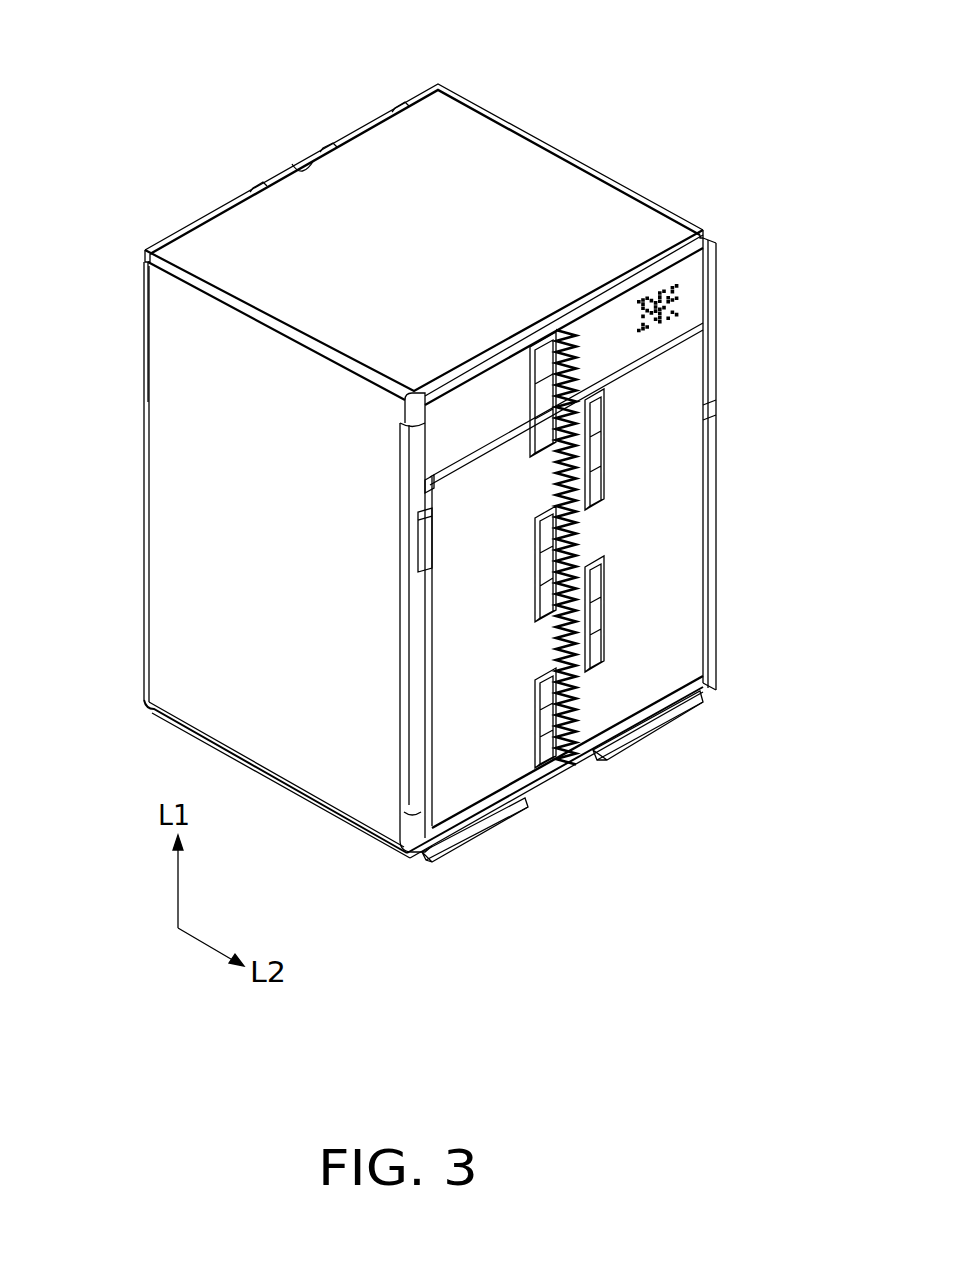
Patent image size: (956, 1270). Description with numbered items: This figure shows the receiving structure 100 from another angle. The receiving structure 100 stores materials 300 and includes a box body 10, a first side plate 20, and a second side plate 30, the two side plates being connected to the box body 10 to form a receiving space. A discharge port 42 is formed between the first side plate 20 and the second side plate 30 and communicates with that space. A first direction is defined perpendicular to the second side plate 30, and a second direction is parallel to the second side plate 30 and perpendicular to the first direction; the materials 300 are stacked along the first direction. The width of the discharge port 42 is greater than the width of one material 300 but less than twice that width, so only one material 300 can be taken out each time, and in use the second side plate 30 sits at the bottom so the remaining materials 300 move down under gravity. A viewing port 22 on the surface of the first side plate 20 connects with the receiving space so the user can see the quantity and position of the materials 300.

The receiving structure 100 is at (434, 49).
The box body 10 is at (175, 530).
The first side plate 20 is at (690, 385).
The viewing port 22 is at (596, 472).
The materials 300 is at (553, 770).
The second side plate 30 is at (447, 848).
The discharge port 42 is at (694, 688).